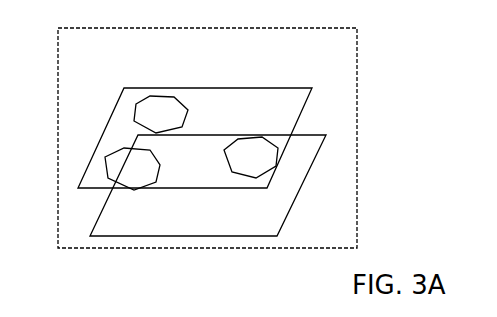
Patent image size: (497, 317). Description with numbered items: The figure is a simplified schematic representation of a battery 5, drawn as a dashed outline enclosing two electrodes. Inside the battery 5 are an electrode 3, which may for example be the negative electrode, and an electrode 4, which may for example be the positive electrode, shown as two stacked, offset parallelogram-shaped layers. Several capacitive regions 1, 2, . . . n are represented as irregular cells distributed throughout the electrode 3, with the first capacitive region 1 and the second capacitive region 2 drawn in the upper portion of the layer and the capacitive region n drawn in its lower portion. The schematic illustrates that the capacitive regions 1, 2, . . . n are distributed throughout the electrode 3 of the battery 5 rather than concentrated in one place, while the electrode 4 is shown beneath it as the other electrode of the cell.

The capacitive region 1 is at (160, 97).
The capacitive region 2 is at (252, 138).
The electrode 3 is at (122, 118).
The electrode 4 is at (111, 228).
The battery 5 is at (58, 137).
The capacitive region n is at (157, 154).